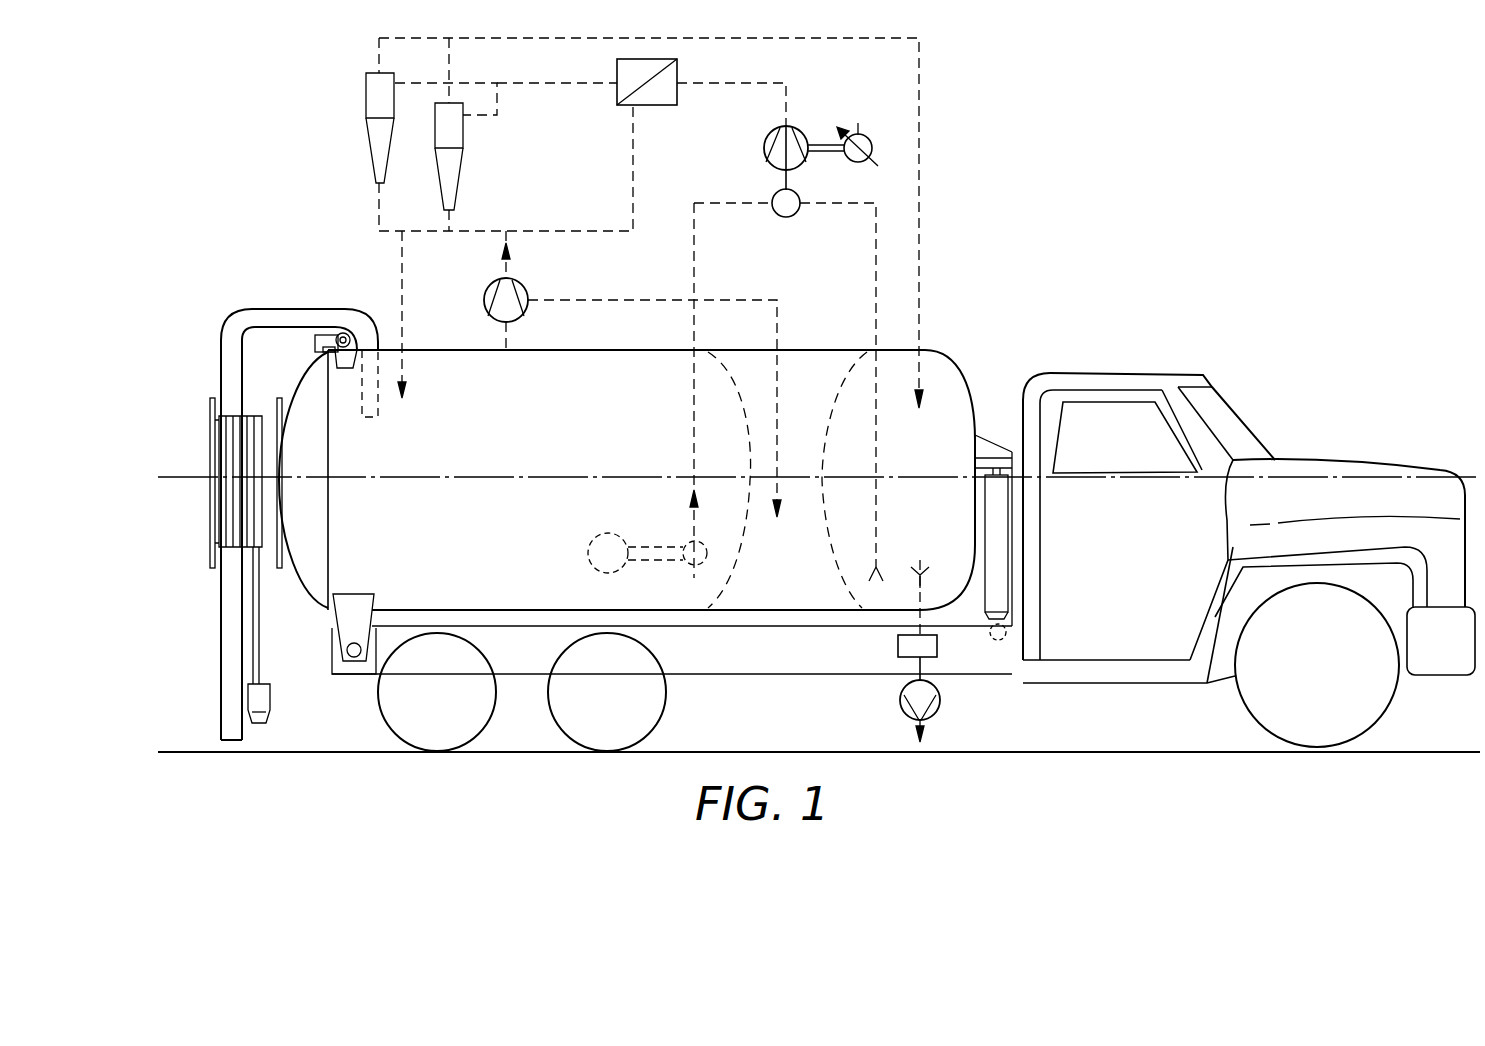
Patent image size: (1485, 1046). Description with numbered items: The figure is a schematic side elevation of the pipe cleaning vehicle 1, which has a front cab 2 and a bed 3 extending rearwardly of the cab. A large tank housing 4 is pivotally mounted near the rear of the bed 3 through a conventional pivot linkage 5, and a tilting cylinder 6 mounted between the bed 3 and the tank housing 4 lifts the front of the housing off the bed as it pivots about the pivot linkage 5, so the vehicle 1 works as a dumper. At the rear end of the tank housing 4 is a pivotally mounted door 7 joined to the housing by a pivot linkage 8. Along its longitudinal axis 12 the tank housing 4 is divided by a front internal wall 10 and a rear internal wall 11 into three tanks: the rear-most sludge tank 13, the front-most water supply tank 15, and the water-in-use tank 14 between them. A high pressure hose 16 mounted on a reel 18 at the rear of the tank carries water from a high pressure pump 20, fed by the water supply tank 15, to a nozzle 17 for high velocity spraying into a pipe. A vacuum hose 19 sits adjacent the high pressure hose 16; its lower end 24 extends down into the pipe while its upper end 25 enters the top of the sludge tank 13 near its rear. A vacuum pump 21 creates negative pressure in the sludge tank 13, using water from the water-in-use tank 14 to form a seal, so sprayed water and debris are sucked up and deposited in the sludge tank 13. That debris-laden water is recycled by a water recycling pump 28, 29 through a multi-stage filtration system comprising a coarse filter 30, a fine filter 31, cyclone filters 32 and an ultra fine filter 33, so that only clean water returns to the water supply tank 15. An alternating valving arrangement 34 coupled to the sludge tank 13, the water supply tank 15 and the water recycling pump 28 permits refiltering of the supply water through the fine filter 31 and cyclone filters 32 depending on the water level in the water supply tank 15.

The pipe cleaning vehicle 1 is at (1072, 306).
The front cab 2 is at (1323, 463).
The bed 3 is at (523, 657).
The tank housing 4 is at (700, 612).
The pivot linkage 5 is at (354, 662).
The tilting cylinder 6 is at (1000, 565).
The door 7 is at (320, 372).
The pivot linkage 8 is at (343, 333).
The front internal wall 10 is at (838, 578).
The rear internal wall 11 is at (736, 578).
The longitudinal axis 12 is at (210, 487).
The sludge tank 13 is at (509, 549).
The water-in-use tank 14 is at (814, 549).
The water supply tank 15 is at (922, 549).
The high pressure hose 16 is at (260, 628).
The nozzle 17 is at (270, 700).
The reel 18 is at (210, 445).
The vacuum hose 19 is at (221, 632).
The high pressure pump 20 is at (942, 702).
The vacuum pump 21 is at (486, 290).
The lower end 24 is at (221, 730).
The upper end 25 is at (378, 400).
The water recycling pump 28 is at (768, 159).
The water recycling pump 29 is at (858, 134).
The coarse filter 30 is at (620, 540).
The fine filter 31 is at (677, 59).
The cyclone filters 32 is at (395, 118).
The ultra fine filter 33 is at (938, 643).
The alternating valving arrangement 34 is at (795, 215).